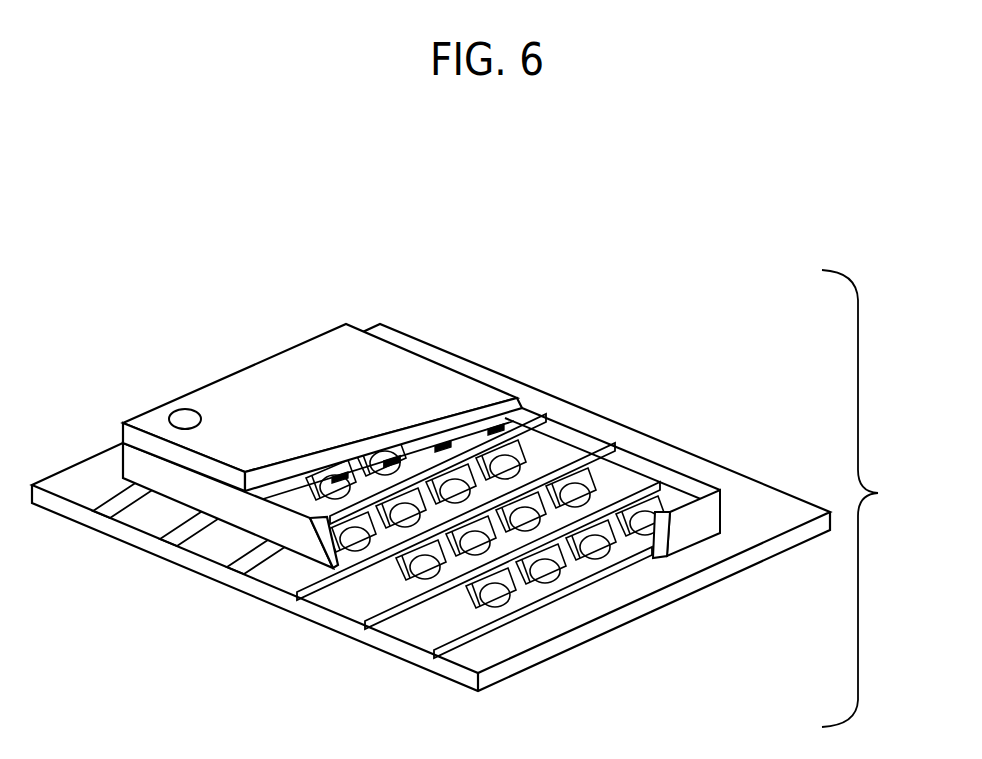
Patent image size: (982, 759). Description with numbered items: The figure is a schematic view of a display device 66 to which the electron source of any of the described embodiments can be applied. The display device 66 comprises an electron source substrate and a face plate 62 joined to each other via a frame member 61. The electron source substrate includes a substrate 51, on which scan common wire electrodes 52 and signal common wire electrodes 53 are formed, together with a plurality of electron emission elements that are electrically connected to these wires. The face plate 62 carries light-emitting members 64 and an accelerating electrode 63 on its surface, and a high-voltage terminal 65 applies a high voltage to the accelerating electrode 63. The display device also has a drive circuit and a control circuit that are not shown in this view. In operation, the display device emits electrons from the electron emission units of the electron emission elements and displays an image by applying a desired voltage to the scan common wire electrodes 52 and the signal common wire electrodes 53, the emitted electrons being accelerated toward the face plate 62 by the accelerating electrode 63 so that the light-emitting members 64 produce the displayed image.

The substrate 51 is at (487, 653).
The scan common wire electrodes 52 is at (420, 605).
The signal common wire electrodes 53 is at (572, 603).
The frame member 61 is at (628, 455).
The face plate 62 is at (373, 445).
The accelerating electrode 63 is at (413, 443).
The light-emitting members 64 is at (442, 442).
The high-voltage terminal 65 is at (183, 417).
The display device 66 is at (869, 498).